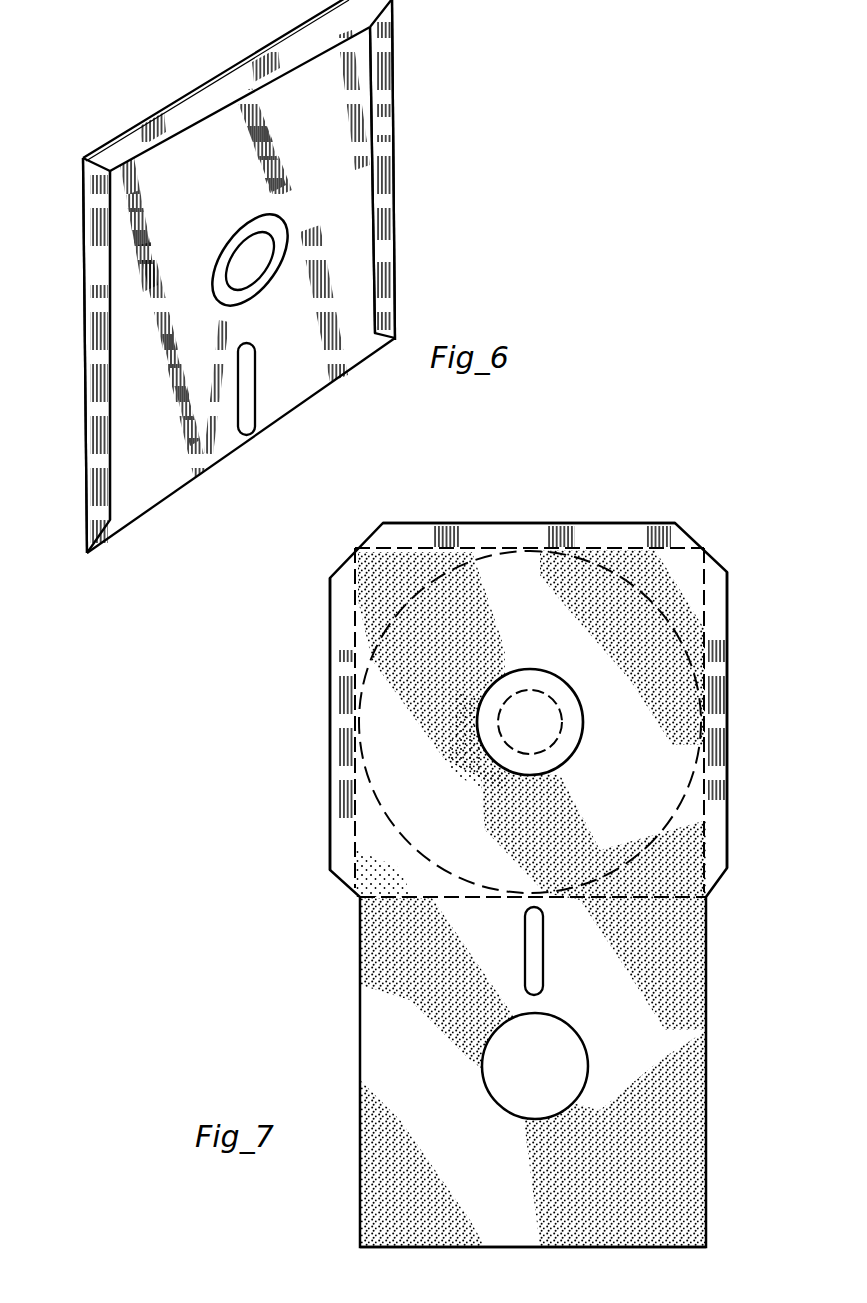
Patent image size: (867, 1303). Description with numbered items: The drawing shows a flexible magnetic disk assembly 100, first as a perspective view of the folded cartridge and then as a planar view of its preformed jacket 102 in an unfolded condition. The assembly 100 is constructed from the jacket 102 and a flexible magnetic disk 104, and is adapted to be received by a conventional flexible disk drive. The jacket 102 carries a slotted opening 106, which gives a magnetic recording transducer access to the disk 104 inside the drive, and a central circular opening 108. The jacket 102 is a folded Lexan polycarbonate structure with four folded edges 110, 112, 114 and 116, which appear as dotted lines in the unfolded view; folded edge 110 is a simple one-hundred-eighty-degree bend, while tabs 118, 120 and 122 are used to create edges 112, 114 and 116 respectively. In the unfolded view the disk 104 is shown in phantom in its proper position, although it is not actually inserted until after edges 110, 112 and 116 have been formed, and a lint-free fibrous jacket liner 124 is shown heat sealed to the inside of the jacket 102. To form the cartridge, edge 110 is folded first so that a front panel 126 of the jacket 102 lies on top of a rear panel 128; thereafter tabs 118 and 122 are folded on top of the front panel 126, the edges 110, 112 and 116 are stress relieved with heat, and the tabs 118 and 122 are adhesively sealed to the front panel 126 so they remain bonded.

In FIG. 6, the flexible magnetic disk assembly 100 is at (356, 386).
In FIG. 6, the jacket 102 is at (349, 139).
In FIG. 7, the jacket 102 is at (454, 1108).
In FIG. 6, the flexible magnetic disk 104 is at (230, 274).
In FIG. 7, the flexible magnetic disk 104 is at (643, 756).
In FIG. 6, the slotted opening 106 is at (250, 378).
In FIG. 7, the slotted opening 106 is at (540, 973).
In FIG. 6, the central circular opening 108 is at (273, 240).
In FIG. 7, the central circular opening 108 is at (575, 1045).
In FIG. 6, the folded edge 110 is at (196, 487).
In FIG. 7, the folded edge 110 is at (462, 902).
In FIG. 6, the folded edge 112 is at (392, 218).
In FIG. 7, the folded edge 112 is at (726, 766).
In FIG. 6, the folded edge 114 is at (243, 63).
In FIG. 7, the folded edge 114 is at (498, 531).
In FIG. 6, the folded edge 116 is at (90, 404).
In FIG. 7, the folded edge 116 is at (350, 798).
In FIG. 6, the tab 118 is at (385, 128).
In FIG. 7, the tab 118 is at (726, 808).
In FIG. 6, the tab 120 is at (198, 102).
In FIG. 7, the tab 120 is at (585, 535).
In FIG. 6, the tab 122 is at (88, 318).
In FIG. 7, the tab 122 is at (342, 666).
In FIG. 7, the jacket liner 124 is at (638, 614).
In FIG. 7, the front panel 126 is at (543, 1222).
In FIG. 7, the rear panel 128 is at (532, 611).